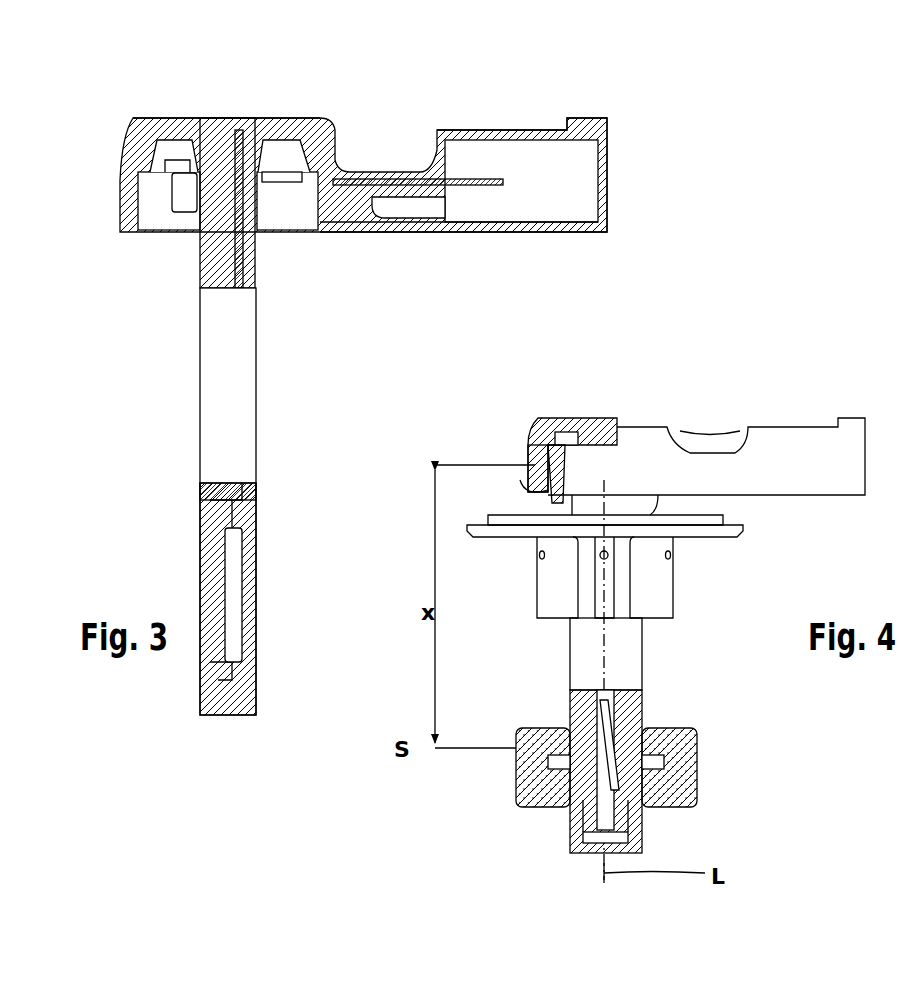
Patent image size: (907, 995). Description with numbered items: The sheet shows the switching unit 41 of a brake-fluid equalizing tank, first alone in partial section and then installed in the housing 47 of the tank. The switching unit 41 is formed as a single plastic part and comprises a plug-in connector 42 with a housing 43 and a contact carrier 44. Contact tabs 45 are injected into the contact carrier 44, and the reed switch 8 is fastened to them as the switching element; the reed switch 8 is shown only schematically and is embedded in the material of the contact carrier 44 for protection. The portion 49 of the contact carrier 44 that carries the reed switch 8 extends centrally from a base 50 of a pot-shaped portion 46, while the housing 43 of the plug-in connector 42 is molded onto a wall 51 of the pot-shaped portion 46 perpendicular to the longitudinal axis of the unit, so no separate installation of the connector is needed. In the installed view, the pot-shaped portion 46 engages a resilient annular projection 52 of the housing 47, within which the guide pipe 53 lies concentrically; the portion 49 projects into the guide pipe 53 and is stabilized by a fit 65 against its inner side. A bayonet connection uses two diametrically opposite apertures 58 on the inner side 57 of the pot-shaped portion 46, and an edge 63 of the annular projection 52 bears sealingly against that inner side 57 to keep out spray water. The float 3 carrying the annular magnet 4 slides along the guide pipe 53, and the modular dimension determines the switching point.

In FIG. 4, the float 3 is at (697, 780).
In FIG. 4, the annular magnet 4 is at (697, 752).
In FIG. 3, the reed switch 8 is at (237, 595).
In FIG. 3, the switching unit 41 is at (468, 108).
In FIG. 4, the switching unit 41 is at (808, 448).
In FIG. 3, the plug-in connector 42 is at (618, 179).
In FIG. 3, the housing 43 is at (525, 226).
In FIG. 3, the contact carrier 44 is at (204, 258).
In FIG. 4, the contact carrier 44 is at (620, 715).
In FIG. 3, the contact tabs 45 is at (252, 254).
In FIG. 3, the pot-shaped portion 46 is at (118, 178).
In FIG. 4, the housing 47 is at (703, 525).
In FIG. 3, the portion 49 is at (198, 528).
In FIG. 3, the base 50 is at (163, 118).
In FIG. 3, the wall 51 is at (122, 206).
In FIG. 4, the wall 51 is at (530, 462).
In FIG. 4, the annular projection 52 is at (597, 500).
In FIG. 4, the guide pipe 53 is at (573, 822).
In FIG. 3, the inner side 57 is at (148, 200).
In FIG. 3, the apertures 58 is at (184, 178).
In FIG. 4, the edge 63 is at (538, 432).
In FIG. 4, the fit 65 is at (635, 814).